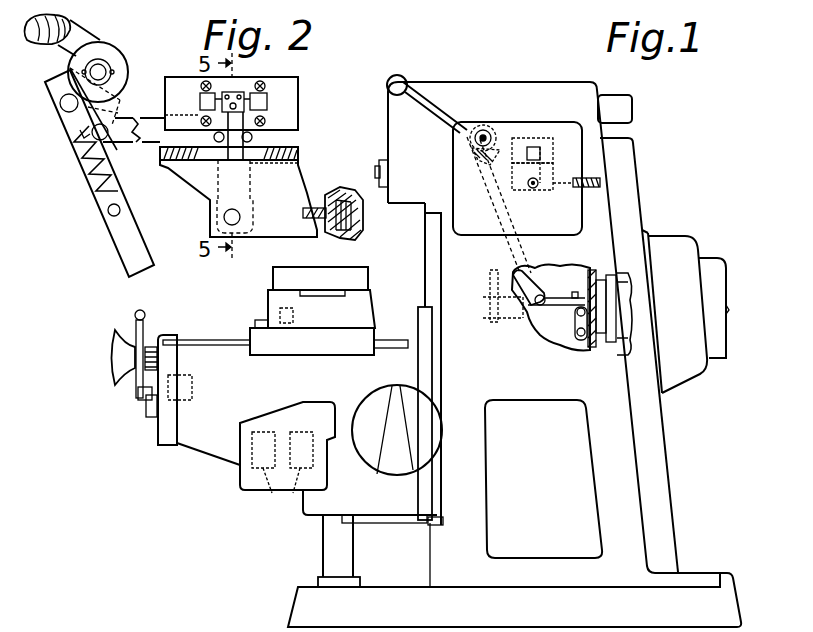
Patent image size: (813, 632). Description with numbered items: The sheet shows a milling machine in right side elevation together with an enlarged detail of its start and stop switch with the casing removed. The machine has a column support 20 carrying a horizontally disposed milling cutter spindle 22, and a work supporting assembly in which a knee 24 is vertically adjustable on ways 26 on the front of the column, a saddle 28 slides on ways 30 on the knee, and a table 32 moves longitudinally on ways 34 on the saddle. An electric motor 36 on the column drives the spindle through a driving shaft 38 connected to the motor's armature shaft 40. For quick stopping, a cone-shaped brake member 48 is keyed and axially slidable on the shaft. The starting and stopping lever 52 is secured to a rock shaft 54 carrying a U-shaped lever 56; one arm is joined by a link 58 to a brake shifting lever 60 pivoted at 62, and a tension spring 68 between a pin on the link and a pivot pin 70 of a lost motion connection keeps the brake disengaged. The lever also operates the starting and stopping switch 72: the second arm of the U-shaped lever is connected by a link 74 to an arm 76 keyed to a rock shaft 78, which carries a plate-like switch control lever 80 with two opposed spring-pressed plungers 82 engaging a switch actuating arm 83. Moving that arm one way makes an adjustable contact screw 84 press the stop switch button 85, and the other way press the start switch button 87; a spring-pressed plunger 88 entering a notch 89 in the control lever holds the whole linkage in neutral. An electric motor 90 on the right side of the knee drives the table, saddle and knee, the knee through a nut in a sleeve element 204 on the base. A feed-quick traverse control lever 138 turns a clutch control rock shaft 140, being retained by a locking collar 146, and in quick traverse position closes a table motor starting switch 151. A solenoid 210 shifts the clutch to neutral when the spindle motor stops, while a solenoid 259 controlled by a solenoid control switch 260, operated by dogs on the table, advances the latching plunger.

In FIG. 1, the column support 20 is at (662, 470).
In FIG. 1, the milling cutter spindle 22 is at (383, 182).
In FIG. 1, the knee 24 is at (217, 457).
In FIG. 1, the ways 26 is at (427, 283).
In FIG. 1, the saddle 28 is at (275, 345).
In FIG. 1, the ways 30 is at (390, 342).
In FIG. 1, the table 32 is at (320, 282).
In FIG. 1, the ways 34 is at (356, 307).
In FIG. 1, the electric motor 36 is at (685, 370).
In FIG. 1, the driving shaft 38 is at (500, 322).
In FIG. 1, the armature shaft 40 is at (729, 310).
In FIG. 1, the cone-shaped brake member 48 is at (612, 345).
In FIG. 1, the starting and stopping lever 52 is at (448, 112).
In FIG. 2, the starting and stopping lever 52 is at (63, 43).
In FIG. 1, the rock shaft 54 is at (470, 138).
In FIG. 2, the rock shaft 54 is at (100, 70).
In FIG. 1, the U-shaped lever 56 is at (497, 140).
In FIG. 2, the U-shaped lever 56 is at (88, 103).
In FIG. 1, the link 58 is at (510, 248).
In FIG. 2, the link 58 is at (118, 235).
In FIG. 1, the brake shifting lever 60 is at (560, 273).
In FIG. 1, the pivot 62 is at (553, 343).
In FIG. 2, the tension spring 68 is at (100, 193).
In FIG. 2, the pivot pin 70 is at (65, 133).
In FIG. 1, the starting and stopping switch 72 is at (527, 137).
In FIG. 2, the starting and stopping switch 72 is at (187, 77).
In FIG. 1, the link 74 is at (518, 190).
In FIG. 2, the link 74 is at (146, 140).
In FIG. 2, the arm 76 is at (218, 182).
In FIG. 2, the rock shaft 78 is at (226, 220).
In FIG. 1, the switch control lever 80 is at (548, 190).
In FIG. 2, the switch control lever 80 is at (290, 180).
In FIG. 2, the spring-pressed plungers 82 is at (298, 155).
In FIG. 2, the switch actuating arm 83 is at (248, 137).
In FIG. 2, the adjustable contact screw 84 is at (217, 93).
In FIG. 2, the stop switch button 85 is at (267, 102).
In FIG. 2, the start switch button 87 is at (200, 100).
In FIG. 1, the spring-pressed plunger 88 is at (572, 178).
In FIG. 2, the spring-pressed plunger 88 is at (337, 227).
In FIG. 2, the notch 89 is at (305, 213).
In FIG. 1, the electric motor 90 is at (368, 407).
In FIG. 1, the feed-quick traverse control lever 138 is at (133, 313).
In FIG. 1, the clutch control rock shaft 140 is at (143, 405).
In FIG. 1, the locking collar 146 is at (148, 415).
In FIG. 1, the table motor starting switch 151 is at (183, 400).
In FIG. 1, the sleeve element 204 is at (348, 535).
In FIG. 1, the solenoid 210 is at (292, 493).
In FIG. 1, the solenoid 259 is at (270, 497).
In FIG. 1, the solenoid control switch 260 is at (280, 313).